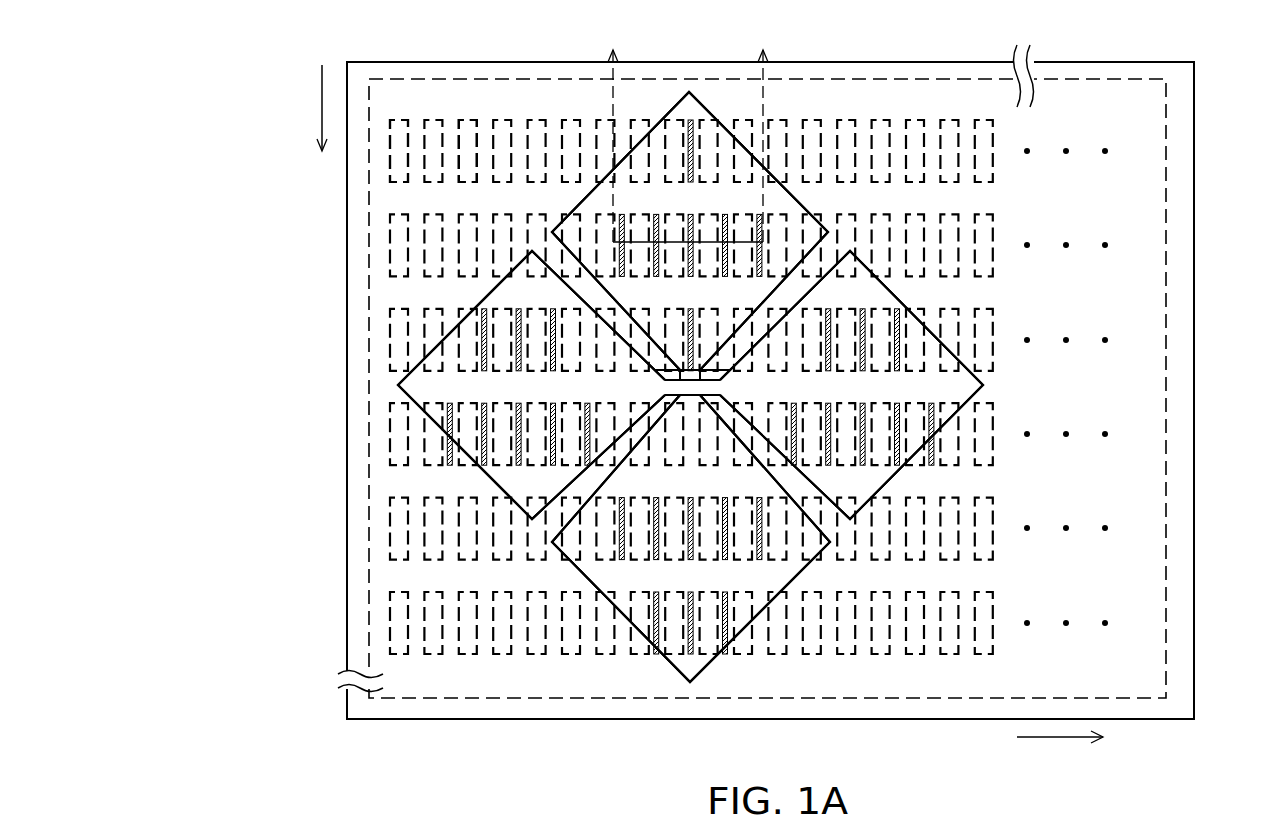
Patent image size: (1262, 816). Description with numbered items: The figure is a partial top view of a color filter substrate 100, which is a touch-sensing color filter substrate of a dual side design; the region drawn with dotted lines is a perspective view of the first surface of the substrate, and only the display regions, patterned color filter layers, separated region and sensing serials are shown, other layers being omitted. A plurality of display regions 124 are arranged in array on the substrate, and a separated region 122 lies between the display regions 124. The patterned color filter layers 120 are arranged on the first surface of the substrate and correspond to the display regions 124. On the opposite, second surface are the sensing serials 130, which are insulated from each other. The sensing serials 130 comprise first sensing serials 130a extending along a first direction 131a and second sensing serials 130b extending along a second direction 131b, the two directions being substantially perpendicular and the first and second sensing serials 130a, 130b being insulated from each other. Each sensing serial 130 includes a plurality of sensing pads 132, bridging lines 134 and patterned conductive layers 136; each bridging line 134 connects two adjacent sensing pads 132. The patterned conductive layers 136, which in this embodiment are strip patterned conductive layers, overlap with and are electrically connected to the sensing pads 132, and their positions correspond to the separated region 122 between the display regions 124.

The color filter substrate 100 is at (1238, 777).
The patterned color filter layer 120 is at (399, 112).
The separated region 122 is at (416, 202).
The display region 124 is at (474, 108).
The sensing serial 130 is at (579, 448).
The first sensing serial 130a is at (256, 246).
The second sensing serial 130b is at (745, 752).
The first direction 131a is at (321, 118).
The second direction 131b is at (1060, 738).
The sensing pad 132 is at (598, 185).
The bridging line 134 is at (680, 377).
The patterned conductive layer 136 is at (618, 240).